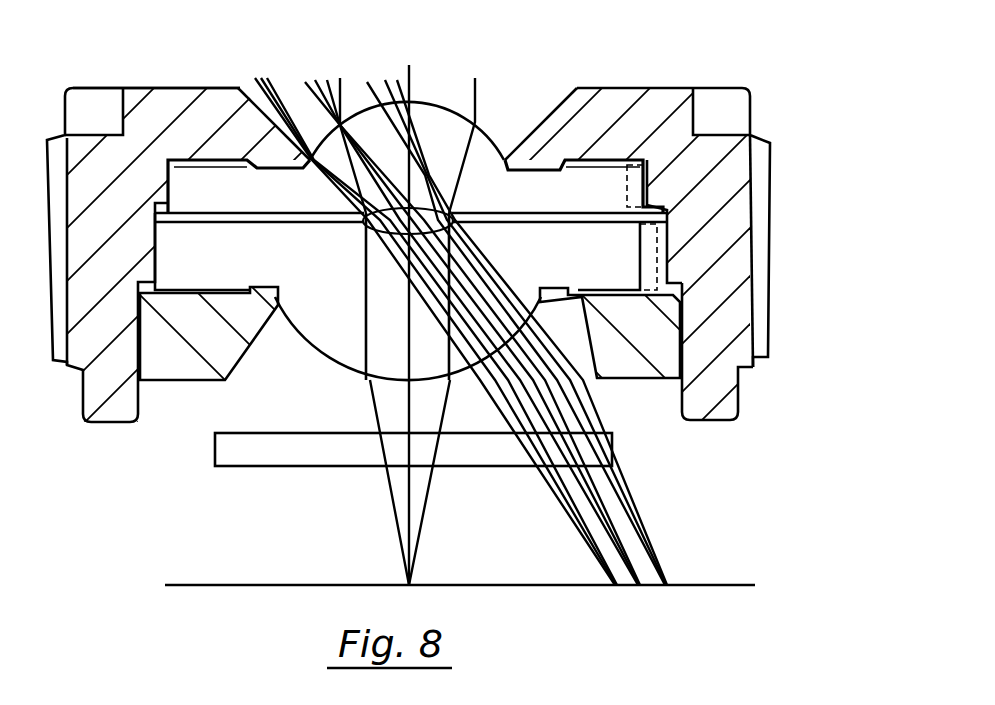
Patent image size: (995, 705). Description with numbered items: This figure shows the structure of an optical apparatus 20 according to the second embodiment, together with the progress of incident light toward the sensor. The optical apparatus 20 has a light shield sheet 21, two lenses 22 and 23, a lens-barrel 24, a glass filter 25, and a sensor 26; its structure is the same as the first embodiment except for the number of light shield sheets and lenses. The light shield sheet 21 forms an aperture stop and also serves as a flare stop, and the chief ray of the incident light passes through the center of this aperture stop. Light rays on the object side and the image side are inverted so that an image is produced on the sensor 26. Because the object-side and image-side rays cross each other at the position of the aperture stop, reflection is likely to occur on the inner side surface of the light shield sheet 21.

The optical apparatus 20 is at (722, 68).
The light shield sheet 21 is at (663, 205).
The lens 22 is at (532, 178).
The lens 23 is at (577, 232).
The lens-barrel 24 is at (732, 404).
The glass filter 25 is at (215, 451).
The sensor 26 is at (227, 584).